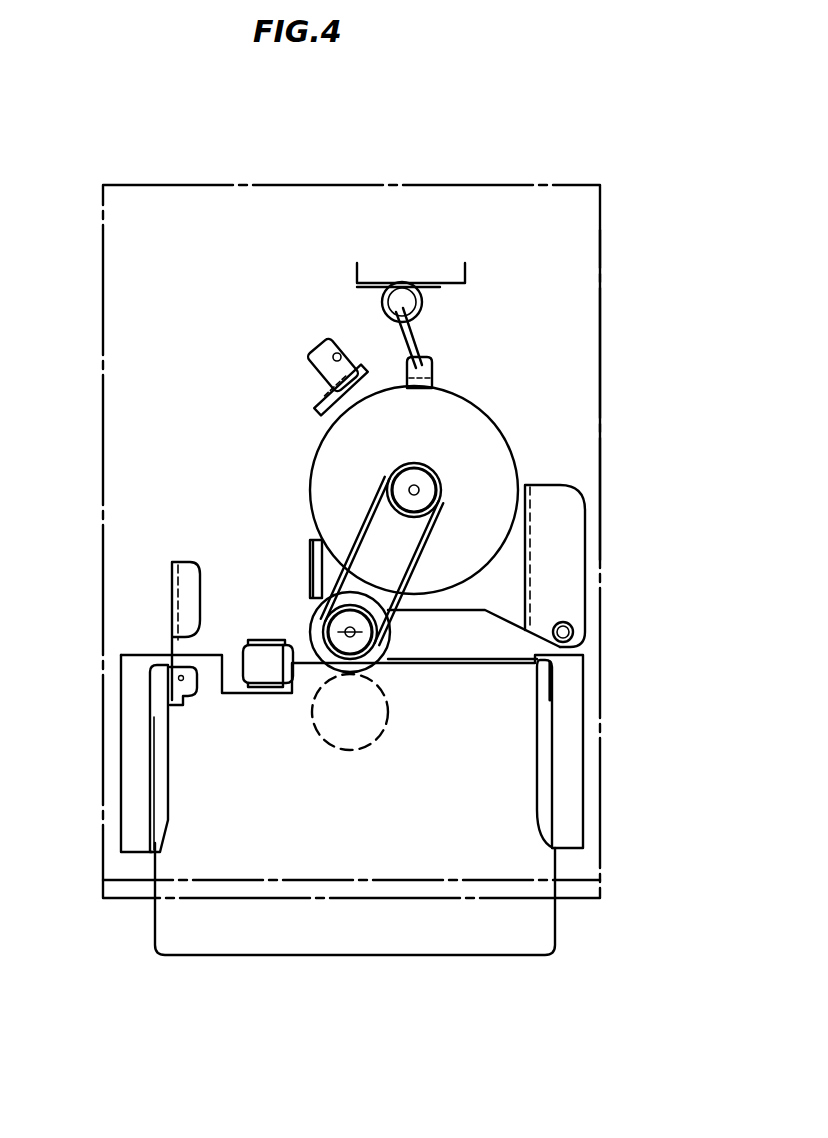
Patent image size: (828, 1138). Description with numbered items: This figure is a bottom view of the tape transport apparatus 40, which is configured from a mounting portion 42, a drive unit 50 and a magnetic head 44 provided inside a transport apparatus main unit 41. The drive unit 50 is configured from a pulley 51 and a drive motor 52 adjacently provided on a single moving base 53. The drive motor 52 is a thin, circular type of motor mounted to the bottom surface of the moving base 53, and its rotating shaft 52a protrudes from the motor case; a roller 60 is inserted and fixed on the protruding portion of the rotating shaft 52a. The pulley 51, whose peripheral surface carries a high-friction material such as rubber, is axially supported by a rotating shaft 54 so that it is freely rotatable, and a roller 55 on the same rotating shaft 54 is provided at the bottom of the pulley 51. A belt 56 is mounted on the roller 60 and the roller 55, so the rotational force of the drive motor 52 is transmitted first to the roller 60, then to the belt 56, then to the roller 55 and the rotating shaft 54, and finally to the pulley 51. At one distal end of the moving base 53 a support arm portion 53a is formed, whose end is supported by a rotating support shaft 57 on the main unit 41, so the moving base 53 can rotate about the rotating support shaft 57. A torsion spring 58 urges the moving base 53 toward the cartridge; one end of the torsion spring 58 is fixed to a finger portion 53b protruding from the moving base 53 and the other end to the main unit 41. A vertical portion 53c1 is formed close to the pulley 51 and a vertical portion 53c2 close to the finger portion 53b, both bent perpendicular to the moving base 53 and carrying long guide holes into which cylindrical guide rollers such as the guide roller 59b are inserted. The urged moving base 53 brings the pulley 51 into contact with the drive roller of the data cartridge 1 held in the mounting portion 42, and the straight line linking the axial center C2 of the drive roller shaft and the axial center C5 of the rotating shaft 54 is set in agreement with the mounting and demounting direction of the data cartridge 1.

The data cartridge 1 is at (558, 948).
The axial center of the drive roller rotating shaft C2 is at (406, 765).
The tape transport apparatus 40 is at (568, 154).
The transport apparatus main unit 41 is at (603, 372).
The mounting portion 42 is at (218, 835).
The magnetic head 44 is at (248, 662).
The drive unit 50 is at (394, 522).
The pulley 51 is at (390, 660).
The drive motor 52 is at (497, 445).
The rotating shaft of the drive motor 52a is at (416, 486).
The moving base 53 is at (505, 605).
The support arm portion 53a is at (572, 522).
The finger portion 53b is at (433, 365).
The vertical portion 53c1 is at (312, 556).
The vertical portion 53c2 is at (322, 403).
The rotating shaft 54 is at (312, 637).
The roller 55 is at (365, 637).
The axial center of the pulley rotating shaft C5 is at (315, 622).
The belt 56 is at (422, 545).
The rotating support shaft 57 is at (575, 632).
The torsion spring 58 is at (385, 297).
The guide roller 59b is at (352, 366).
The roller 60 is at (432, 490).